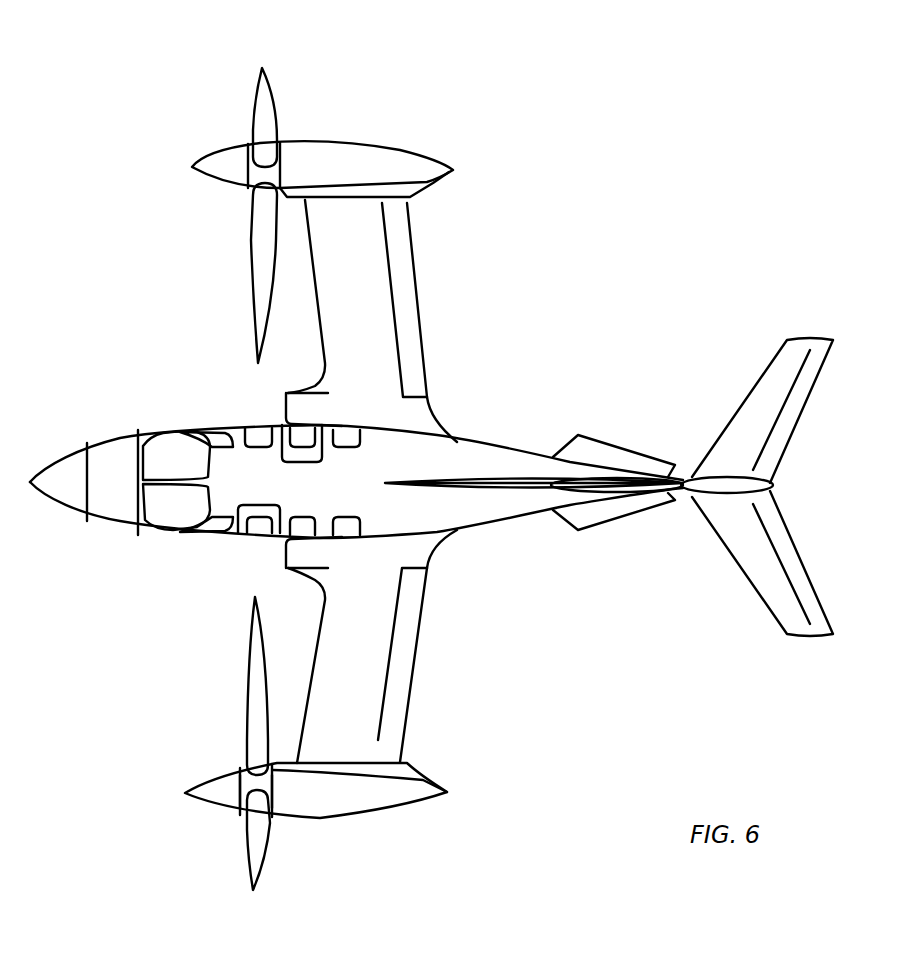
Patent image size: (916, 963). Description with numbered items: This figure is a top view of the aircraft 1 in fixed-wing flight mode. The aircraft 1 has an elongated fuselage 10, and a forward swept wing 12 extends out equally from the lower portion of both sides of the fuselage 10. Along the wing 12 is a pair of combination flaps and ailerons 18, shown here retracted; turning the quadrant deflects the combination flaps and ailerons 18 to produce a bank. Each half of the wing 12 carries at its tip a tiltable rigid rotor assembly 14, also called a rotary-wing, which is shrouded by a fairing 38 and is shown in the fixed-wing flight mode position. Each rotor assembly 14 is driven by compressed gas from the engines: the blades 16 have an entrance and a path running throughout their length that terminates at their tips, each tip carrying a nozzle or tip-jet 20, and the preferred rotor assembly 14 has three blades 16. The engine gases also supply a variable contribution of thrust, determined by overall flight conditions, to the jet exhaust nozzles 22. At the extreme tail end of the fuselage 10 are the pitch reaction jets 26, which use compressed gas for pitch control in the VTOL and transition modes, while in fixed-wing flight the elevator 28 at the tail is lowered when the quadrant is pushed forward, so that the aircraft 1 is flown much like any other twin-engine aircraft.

The aircraft 1 is at (576, 251).
The fuselage 10 is at (65, 493).
The forward swept wing 12 is at (340, 617).
The tiltable rigid rotor assembly 14 is at (245, 795).
The blades 16 is at (250, 697).
The combination flaps and ailerons 18 is at (405, 316).
The tip-jet 20 is at (258, 363).
The jet exhaust nozzles 22 is at (432, 553).
The pitch reaction jets 26 is at (783, 486).
The elevator 28 is at (793, 568).
The fairing 38 is at (372, 158).